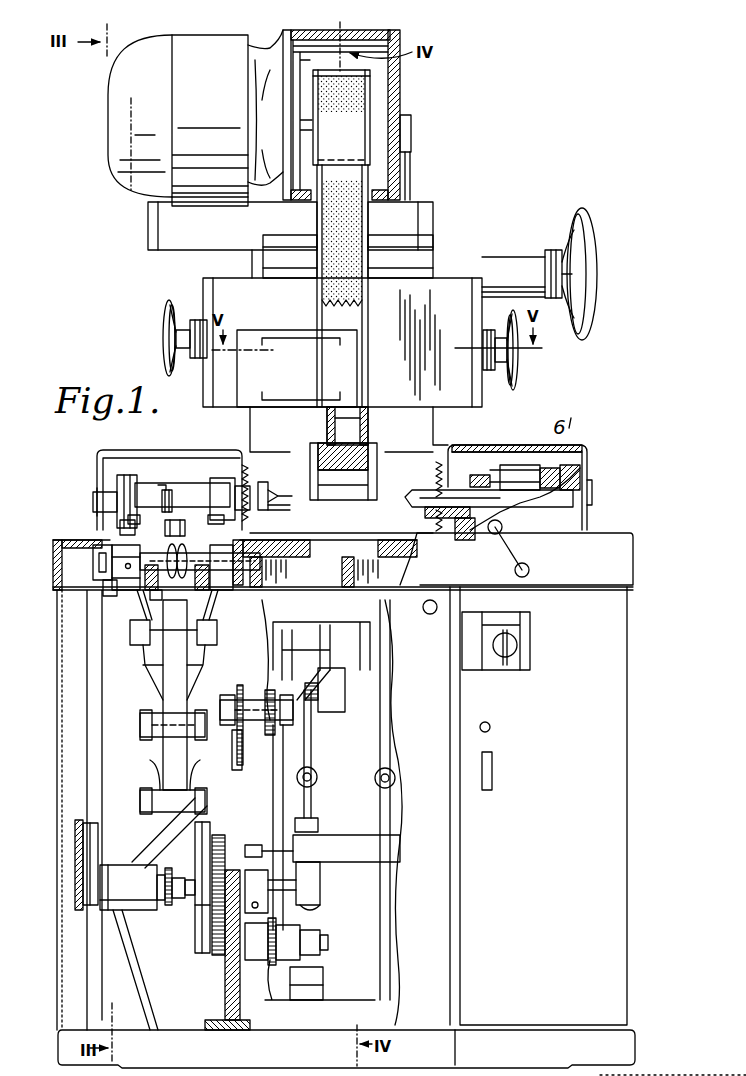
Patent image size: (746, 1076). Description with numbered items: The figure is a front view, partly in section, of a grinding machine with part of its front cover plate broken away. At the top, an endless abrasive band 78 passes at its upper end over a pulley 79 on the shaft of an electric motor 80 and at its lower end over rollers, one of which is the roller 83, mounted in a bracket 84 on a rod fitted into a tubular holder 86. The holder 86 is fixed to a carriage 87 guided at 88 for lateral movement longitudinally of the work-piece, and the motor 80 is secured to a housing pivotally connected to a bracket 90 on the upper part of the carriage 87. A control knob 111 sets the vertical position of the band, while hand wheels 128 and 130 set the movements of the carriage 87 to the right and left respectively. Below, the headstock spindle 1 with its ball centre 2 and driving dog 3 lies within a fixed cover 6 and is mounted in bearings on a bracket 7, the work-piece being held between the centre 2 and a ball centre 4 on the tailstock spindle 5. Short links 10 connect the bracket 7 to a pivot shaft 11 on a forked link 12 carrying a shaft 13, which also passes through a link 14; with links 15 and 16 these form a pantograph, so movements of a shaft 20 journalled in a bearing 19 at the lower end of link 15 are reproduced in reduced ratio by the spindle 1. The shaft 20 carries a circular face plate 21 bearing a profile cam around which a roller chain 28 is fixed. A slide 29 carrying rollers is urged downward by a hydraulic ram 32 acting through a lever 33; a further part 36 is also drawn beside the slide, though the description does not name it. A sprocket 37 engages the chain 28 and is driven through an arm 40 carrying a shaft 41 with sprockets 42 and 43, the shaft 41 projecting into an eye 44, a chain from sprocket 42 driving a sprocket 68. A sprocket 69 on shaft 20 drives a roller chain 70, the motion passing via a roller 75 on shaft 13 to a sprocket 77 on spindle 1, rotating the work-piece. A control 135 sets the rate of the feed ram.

The spindle 1 is at (202, 490).
The ball centre 2 is at (276, 498).
The driving dog 3 is at (280, 523).
The ball centre 4 is at (406, 497).
The tailstock spindle 5 is at (412, 506).
The fixed cover 6 is at (160, 455).
The bracket 7 is at (128, 488).
The short links 10 is at (250, 522).
The pivot shaft 11 is at (128, 548).
The forked link 12 is at (150, 634).
The shaft 13 is at (160, 562).
The link 14 is at (140, 600).
The link 15 is at (150, 832).
The link 16 is at (163, 768).
The bearing 19 is at (129, 947).
The shaft 20 is at (86, 890).
The circular face plate 21 is at (200, 935).
The roller chain 28 is at (218, 835).
The slide 29 is at (222, 986).
The hydraulic ram 32 is at (258, 893).
The lever 33 is at (262, 852).
The rod 36 is at (238, 752).
The sprocket 37 is at (228, 950).
The arm 40 is at (300, 768).
The shaft 41 is at (228, 712).
The sprocket 42 is at (278, 728).
The sprocket 43 is at (240, 690).
The eye 44 is at (280, 700).
The sprocket 68 is at (268, 978).
The sprocket 69 is at (171, 909).
The roller chain 70 is at (170, 872).
The roller 75 is at (230, 570).
The sprocket 77 is at (170, 490).
The endless abrasive band 78 is at (372, 190).
The pulley 79 is at (372, 90).
The electric motor 80 is at (195, 118).
The roller 83 is at (347, 490).
The bracket 84 is at (318, 356).
The tubular holder 86 is at (362, 434).
The carriage 87 is at (452, 290).
The guide 88 is at (390, 30).
The bracket 90 is at (412, 150).
The control knob 111 is at (597, 274).
The hand wheel 128 is at (516, 378).
The hand wheel 130 is at (168, 330).
The control 135 is at (514, 670).